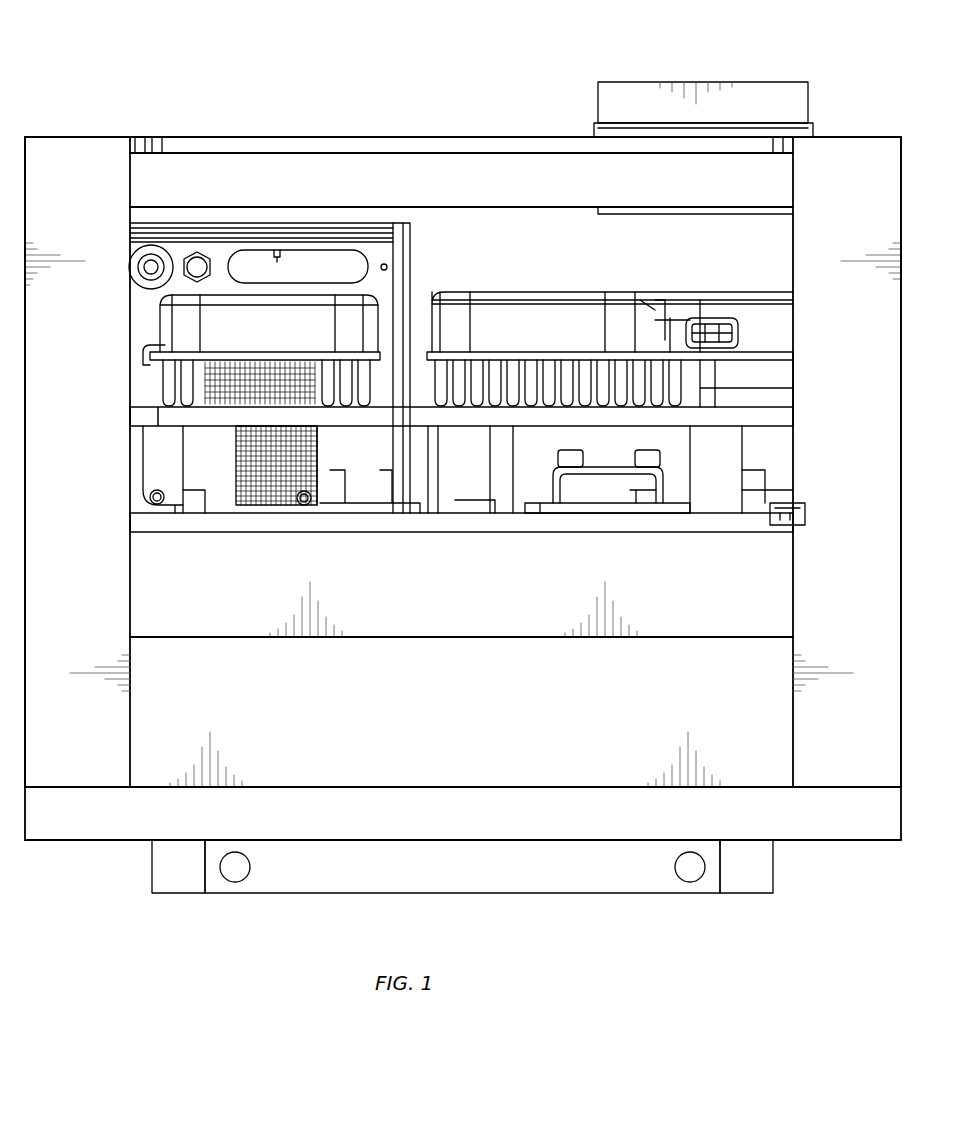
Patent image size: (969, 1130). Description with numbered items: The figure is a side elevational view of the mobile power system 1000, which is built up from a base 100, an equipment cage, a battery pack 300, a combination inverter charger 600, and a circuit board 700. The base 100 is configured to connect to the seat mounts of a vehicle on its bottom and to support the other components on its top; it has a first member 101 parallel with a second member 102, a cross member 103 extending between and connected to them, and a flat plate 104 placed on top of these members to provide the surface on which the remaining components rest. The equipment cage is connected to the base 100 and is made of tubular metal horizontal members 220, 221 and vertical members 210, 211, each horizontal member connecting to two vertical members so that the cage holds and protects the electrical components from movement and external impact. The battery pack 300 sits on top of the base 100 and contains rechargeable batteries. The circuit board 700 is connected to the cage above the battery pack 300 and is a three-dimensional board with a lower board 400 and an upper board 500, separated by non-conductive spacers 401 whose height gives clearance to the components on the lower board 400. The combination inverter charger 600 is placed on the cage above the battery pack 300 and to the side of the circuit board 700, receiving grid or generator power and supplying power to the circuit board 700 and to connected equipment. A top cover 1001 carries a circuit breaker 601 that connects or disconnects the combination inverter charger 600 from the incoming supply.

The mobile power system 1000 is at (95, 58).
The top cover 1001 is at (368, 152).
The circuit breaker 601 is at (600, 105).
The horizontal member 221 is at (461, 189).
The combination inverter charger 600 is at (405, 265).
The upper board 500 is at (148, 420).
The circuit board 700 is at (110, 476).
The spacers 401 is at (482, 470).
The vertical member 210 is at (55, 462).
The vertical member 211 is at (864, 462).
The lower board 400 is at (198, 522).
The horizontal member 220 is at (461, 601).
The battery pack 300 is at (461, 735).
The base 100 is at (70, 828).
The first member 101 is at (187, 884).
The second member 102 is at (745, 880).
The cross member 103 is at (375, 880).
The flat plate 104 is at (833, 826).